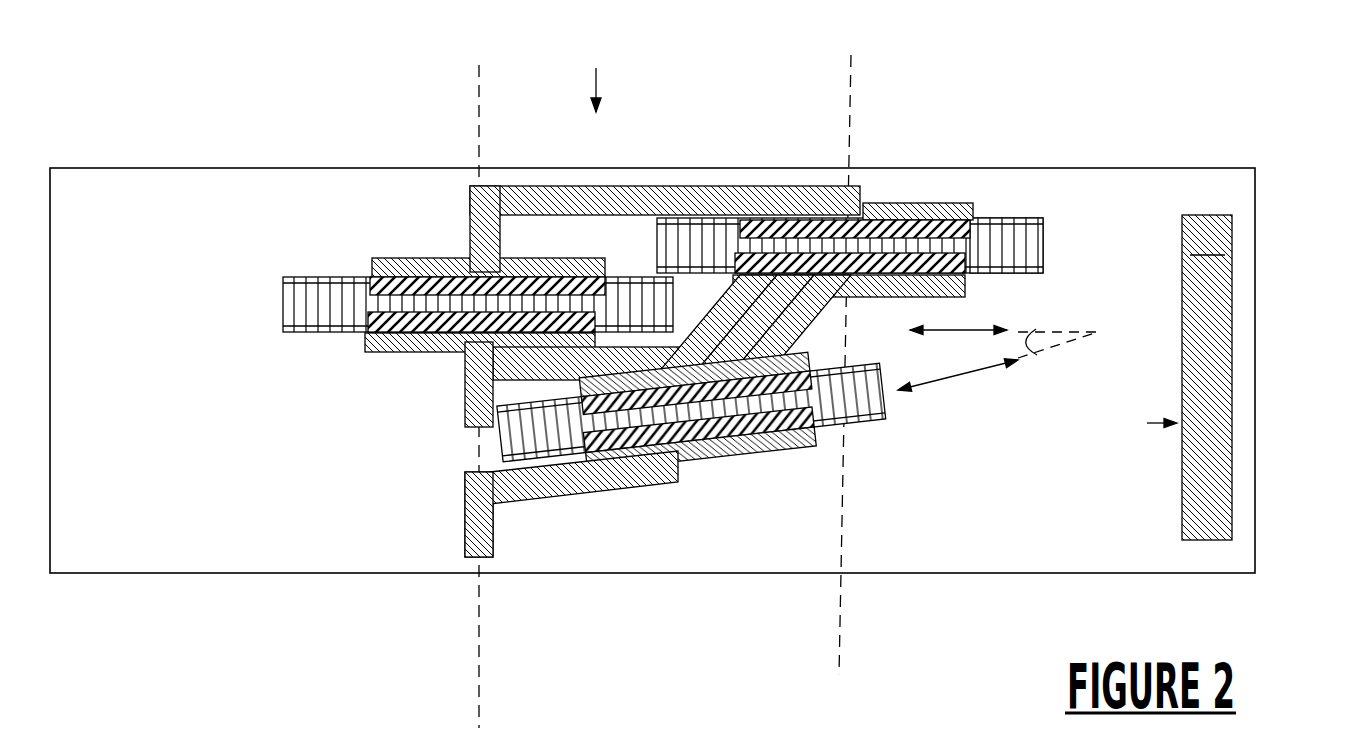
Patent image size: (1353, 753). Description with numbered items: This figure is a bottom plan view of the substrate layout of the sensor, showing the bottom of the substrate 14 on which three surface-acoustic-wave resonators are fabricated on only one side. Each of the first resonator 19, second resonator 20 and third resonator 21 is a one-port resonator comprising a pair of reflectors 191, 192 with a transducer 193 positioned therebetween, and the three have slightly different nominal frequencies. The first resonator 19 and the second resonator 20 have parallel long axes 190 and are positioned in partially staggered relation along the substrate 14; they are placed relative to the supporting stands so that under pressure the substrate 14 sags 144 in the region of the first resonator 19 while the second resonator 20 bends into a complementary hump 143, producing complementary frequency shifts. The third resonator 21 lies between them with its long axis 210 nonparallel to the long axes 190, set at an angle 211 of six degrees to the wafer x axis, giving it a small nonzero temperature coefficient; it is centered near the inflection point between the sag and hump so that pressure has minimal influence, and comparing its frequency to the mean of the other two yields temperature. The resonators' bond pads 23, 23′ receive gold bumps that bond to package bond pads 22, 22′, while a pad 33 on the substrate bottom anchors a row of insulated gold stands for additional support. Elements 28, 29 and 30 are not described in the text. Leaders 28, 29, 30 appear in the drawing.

The substrate 14 is at (574, 76).
The first resonator 19 is at (901, 187).
The second resonator 20 is at (377, 233).
The third resonator 21 is at (903, 407).
The bond pad 22 is at (493, 242).
The bond pad 23 is at (478, 187).
The top beam 28 is at (470, 220).
The middle beam 29 is at (495, 362).
The bottom beam 30 is at (468, 518).
The pad 33 is at (1146, 425).
The long axis 190 is at (962, 327).
The reflector 191 is at (695, 242).
The reflector 192 is at (1013, 232).
The transducer 193 is at (908, 207).
The long axis 210 is at (972, 372).
The angle 211 is at (1063, 342).
The bond pad 22′ is at (1263, 370).
The bond pad 23′ is at (1205, 378).
The hump 143 is at (478, 707).
The sag 144 is at (840, 598).